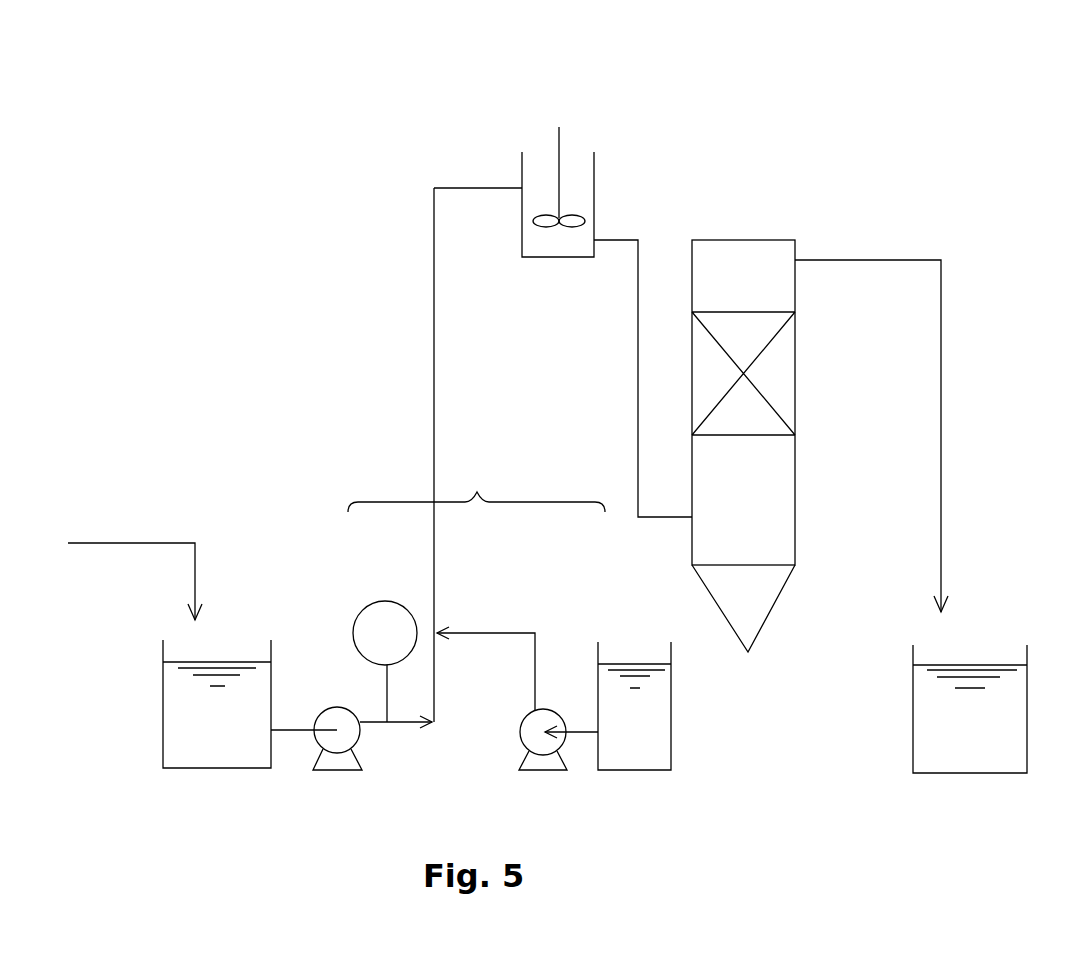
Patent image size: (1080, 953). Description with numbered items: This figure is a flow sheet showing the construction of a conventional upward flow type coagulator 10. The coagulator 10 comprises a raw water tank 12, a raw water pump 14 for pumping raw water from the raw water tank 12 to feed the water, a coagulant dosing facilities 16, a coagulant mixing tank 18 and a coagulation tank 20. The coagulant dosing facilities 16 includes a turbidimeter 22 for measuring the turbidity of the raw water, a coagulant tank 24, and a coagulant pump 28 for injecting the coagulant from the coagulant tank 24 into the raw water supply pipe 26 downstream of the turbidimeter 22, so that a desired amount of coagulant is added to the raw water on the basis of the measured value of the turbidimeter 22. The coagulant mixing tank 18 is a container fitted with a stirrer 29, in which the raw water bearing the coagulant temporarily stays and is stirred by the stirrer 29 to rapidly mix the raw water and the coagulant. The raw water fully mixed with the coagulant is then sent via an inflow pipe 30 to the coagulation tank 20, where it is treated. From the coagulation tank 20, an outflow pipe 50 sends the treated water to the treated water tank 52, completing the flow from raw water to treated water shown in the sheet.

The upward flow type coagulator 10 is at (781, 146).
The raw water tank 12 is at (163, 709).
The raw water pump 14 is at (360, 740).
The coagulant dosing facilities 16 is at (476, 483).
The coagulant mixing tank 18 is at (595, 178).
The coagulation tank 20 is at (795, 470).
The turbidimeter 22 is at (386, 601).
The coagulant tank 24 is at (598, 680).
The raw water supply pipe 26 is at (434, 344).
The coagulant pump 28 is at (540, 708).
The stirrer 29 is at (560, 153).
The inflow pipe 30 is at (638, 400).
The outflow pipe 50 is at (868, 260).
The treated water tank 52 is at (913, 703).